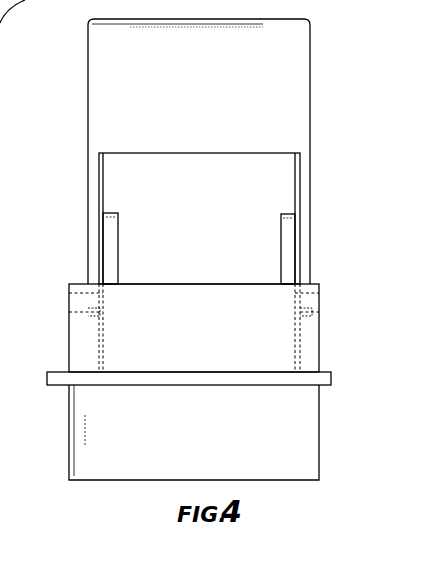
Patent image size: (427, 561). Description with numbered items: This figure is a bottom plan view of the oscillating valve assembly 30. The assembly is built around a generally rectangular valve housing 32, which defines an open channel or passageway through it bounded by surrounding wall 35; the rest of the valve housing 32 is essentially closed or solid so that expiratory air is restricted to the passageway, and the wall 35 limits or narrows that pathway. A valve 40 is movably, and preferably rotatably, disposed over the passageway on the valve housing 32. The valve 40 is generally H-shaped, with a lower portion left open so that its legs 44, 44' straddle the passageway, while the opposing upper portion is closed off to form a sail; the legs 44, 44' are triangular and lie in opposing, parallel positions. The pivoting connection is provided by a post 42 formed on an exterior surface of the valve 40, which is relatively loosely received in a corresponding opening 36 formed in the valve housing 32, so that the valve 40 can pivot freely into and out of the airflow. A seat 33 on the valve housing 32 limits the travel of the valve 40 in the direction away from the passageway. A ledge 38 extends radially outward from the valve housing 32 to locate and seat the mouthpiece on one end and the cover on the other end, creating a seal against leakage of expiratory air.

The oscillating valve assembly 30 is at (353, 88).
The valve 40 is at (113, 88).
The wall 35 is at (245, 196).
The leg 44 is at (73, 262).
The leg 44' is at (329, 262).
The seat 33 is at (110, 243).
The post 42 is at (320, 298).
The opening 36 is at (70, 298).
The ledge 38 is at (331, 378).
The valve housing 32 is at (68, 432).